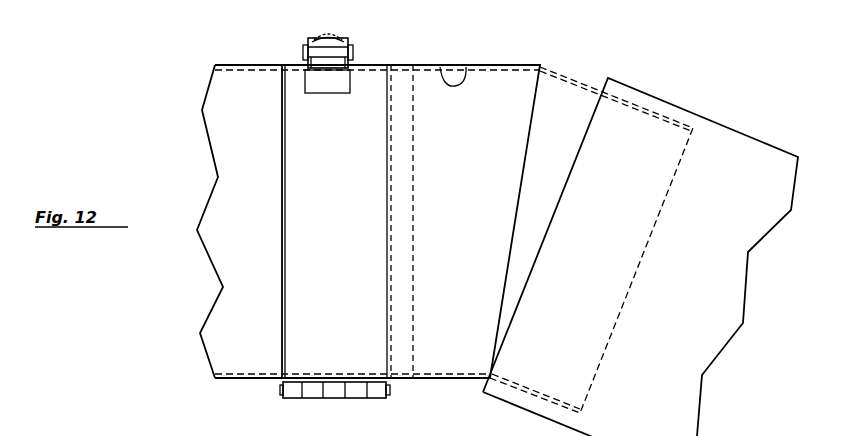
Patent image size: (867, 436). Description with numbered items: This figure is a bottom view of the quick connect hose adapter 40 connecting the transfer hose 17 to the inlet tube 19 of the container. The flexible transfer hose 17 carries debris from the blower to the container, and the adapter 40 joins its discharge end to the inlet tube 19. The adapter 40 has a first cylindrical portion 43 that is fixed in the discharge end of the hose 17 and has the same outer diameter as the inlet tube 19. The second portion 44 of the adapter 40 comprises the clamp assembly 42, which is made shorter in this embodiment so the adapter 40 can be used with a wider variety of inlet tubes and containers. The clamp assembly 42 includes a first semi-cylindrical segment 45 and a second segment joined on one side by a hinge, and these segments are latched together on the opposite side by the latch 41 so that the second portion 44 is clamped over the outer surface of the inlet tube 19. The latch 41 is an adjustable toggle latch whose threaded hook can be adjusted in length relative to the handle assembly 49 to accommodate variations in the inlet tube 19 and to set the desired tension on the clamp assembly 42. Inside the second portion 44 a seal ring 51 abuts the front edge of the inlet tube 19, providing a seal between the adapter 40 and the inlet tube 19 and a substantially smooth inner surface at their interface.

The transfer hose 17 is at (726, 150).
The inlet tube 19 is at (235, 133).
The quick connect hose adapter 40 is at (557, 63).
The latch 41 is at (313, 50).
The clamp assembly 42 is at (307, 345).
The first cylindrical portion 43 is at (380, 435).
The second portion 44 is at (425, 380).
The first semi-cylindrical segment 45 is at (230, 298).
The handle assembly 49 is at (315, 41).
The seal ring 51 is at (468, 74).